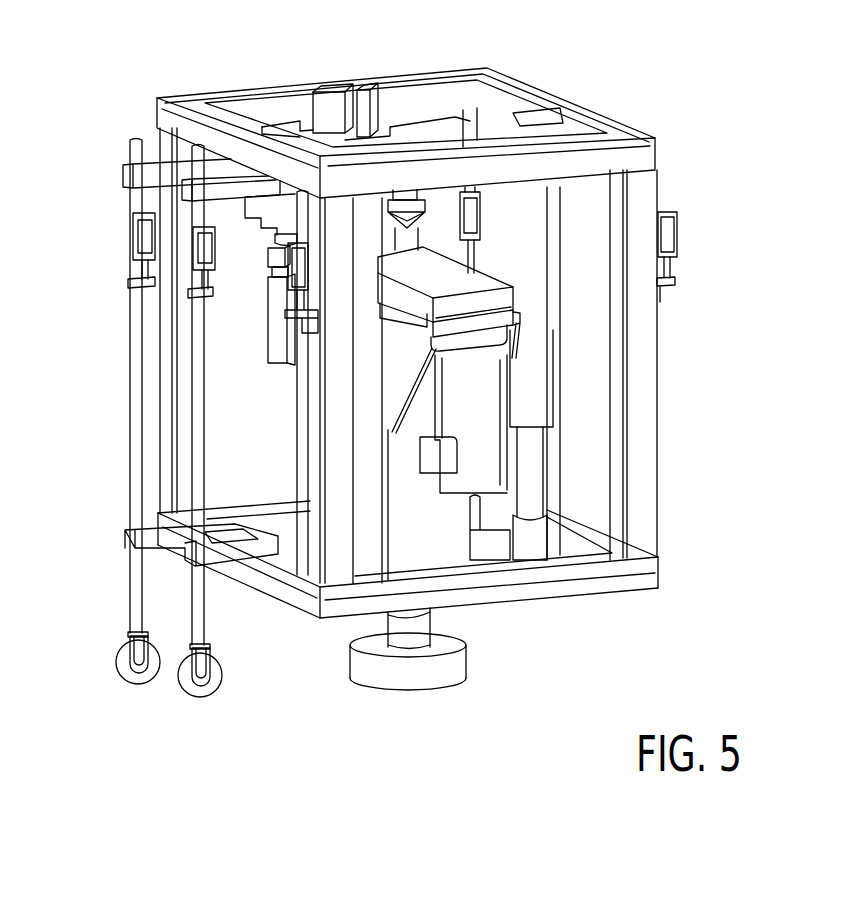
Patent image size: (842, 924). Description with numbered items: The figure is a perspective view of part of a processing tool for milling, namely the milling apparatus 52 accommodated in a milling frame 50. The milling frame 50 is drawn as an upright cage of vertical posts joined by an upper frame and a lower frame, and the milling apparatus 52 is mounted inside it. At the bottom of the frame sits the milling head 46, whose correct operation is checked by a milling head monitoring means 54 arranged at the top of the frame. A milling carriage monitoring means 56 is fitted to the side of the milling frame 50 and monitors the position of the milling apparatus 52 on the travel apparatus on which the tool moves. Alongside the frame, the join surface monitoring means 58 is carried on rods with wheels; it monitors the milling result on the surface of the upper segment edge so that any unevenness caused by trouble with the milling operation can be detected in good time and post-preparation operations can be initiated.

The milling head 46 is at (427, 668).
The milling frame 50 is at (643, 414).
The milling apparatus 52 is at (533, 78).
The milling head monitoring means 54 is at (407, 125).
The milling carriage monitoring means 56 is at (678, 233).
The join surface monitoring means 58 is at (117, 295).